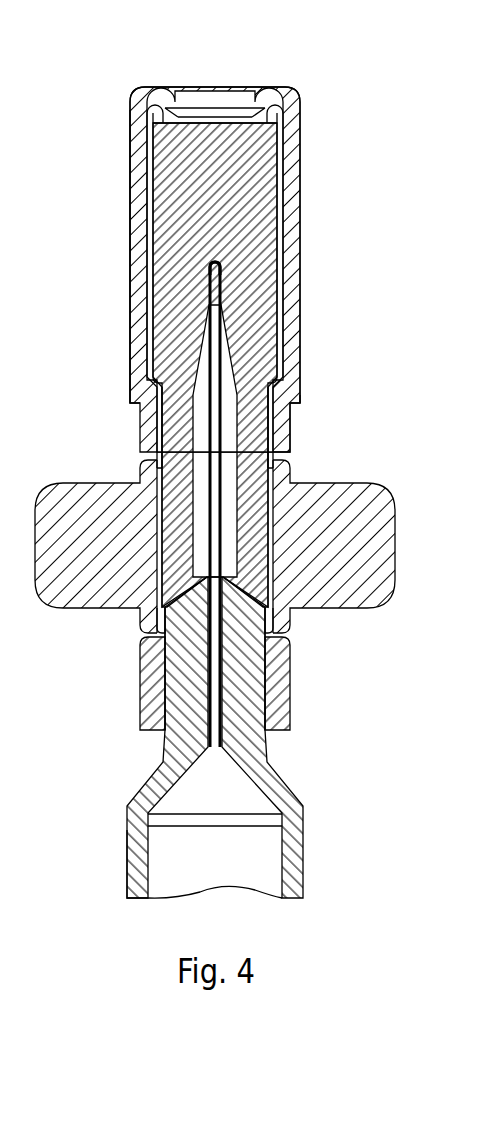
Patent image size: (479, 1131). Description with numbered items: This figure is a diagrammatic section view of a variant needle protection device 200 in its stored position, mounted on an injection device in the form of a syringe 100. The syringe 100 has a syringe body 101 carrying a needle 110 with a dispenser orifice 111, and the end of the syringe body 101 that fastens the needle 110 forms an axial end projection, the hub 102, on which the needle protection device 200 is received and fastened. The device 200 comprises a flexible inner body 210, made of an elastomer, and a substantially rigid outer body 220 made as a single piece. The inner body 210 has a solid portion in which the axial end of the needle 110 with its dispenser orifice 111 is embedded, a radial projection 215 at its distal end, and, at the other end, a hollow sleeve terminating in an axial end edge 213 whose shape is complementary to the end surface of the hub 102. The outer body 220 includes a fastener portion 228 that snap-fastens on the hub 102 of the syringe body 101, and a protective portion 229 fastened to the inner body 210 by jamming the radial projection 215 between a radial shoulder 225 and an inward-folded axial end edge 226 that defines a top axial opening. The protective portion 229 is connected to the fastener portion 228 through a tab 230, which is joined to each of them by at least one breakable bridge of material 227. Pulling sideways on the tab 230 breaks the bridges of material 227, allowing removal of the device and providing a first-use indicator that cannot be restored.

The syringe 100 is at (312, 840).
The syringe body 101 is at (140, 858).
The hub 102 is at (143, 656).
The needle 110 is at (215, 368).
The dispenser orifice 111 is at (219, 263).
The needle protection device 200 is at (112, 324).
The inner body 210 is at (180, 235).
The axial end edge 213 is at (257, 584).
The radial projection 215 is at (178, 152).
The outer body 220 is at (302, 246).
The radial shoulder 225 is at (284, 400).
The axial end edge 226 is at (152, 88).
The breakable bridge of material 227 is at (155, 626).
The fastener portion 228 is at (270, 667).
The protective portion 229 is at (138, 287).
The tab 230 is at (88, 558).